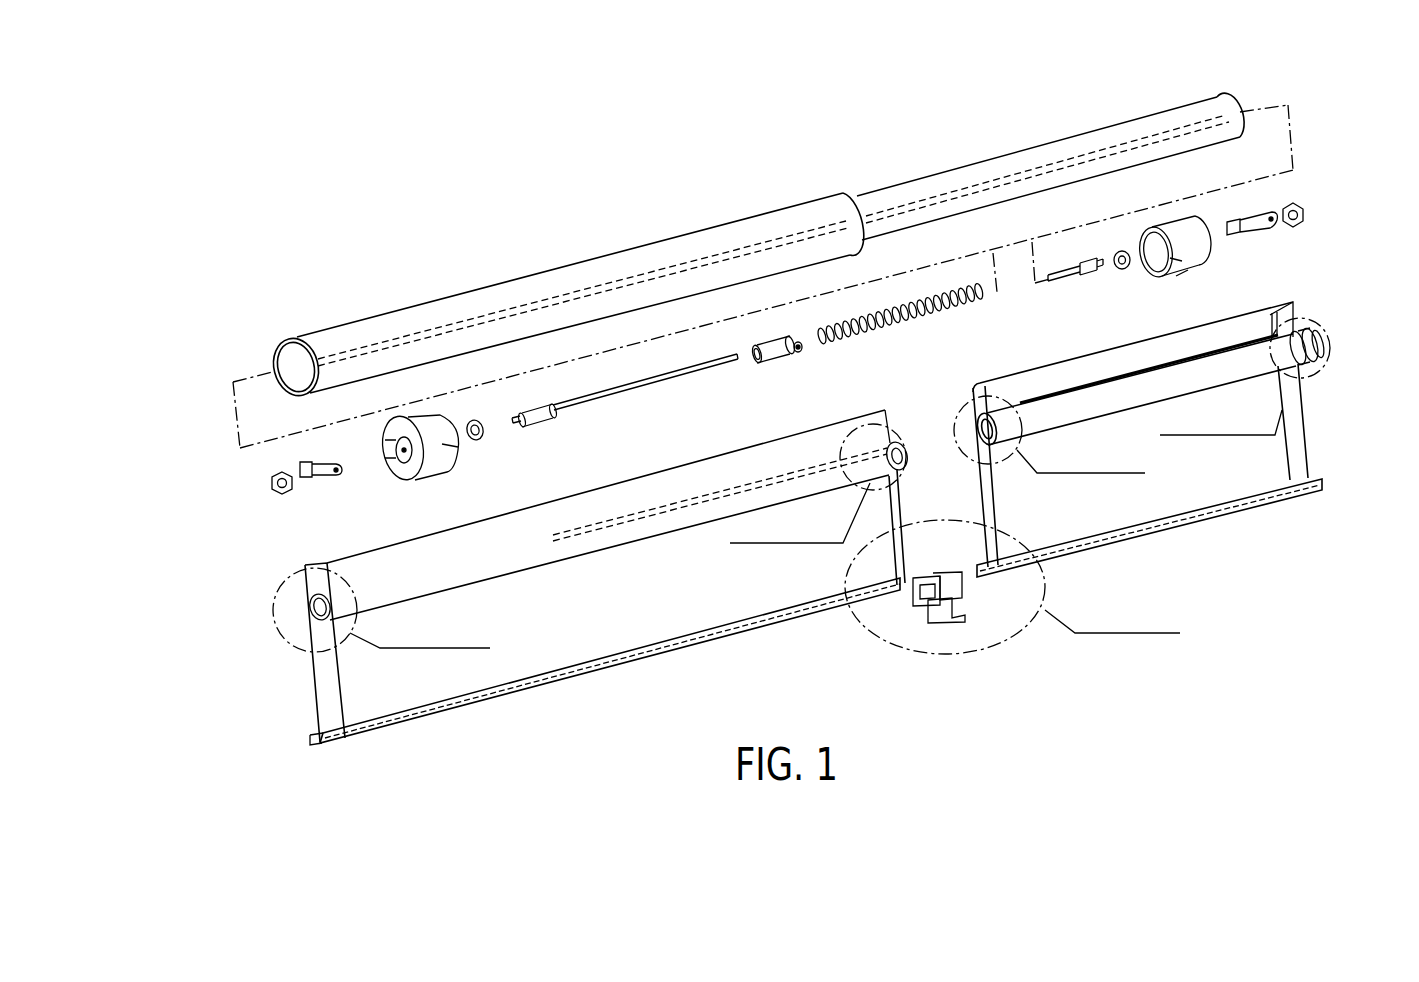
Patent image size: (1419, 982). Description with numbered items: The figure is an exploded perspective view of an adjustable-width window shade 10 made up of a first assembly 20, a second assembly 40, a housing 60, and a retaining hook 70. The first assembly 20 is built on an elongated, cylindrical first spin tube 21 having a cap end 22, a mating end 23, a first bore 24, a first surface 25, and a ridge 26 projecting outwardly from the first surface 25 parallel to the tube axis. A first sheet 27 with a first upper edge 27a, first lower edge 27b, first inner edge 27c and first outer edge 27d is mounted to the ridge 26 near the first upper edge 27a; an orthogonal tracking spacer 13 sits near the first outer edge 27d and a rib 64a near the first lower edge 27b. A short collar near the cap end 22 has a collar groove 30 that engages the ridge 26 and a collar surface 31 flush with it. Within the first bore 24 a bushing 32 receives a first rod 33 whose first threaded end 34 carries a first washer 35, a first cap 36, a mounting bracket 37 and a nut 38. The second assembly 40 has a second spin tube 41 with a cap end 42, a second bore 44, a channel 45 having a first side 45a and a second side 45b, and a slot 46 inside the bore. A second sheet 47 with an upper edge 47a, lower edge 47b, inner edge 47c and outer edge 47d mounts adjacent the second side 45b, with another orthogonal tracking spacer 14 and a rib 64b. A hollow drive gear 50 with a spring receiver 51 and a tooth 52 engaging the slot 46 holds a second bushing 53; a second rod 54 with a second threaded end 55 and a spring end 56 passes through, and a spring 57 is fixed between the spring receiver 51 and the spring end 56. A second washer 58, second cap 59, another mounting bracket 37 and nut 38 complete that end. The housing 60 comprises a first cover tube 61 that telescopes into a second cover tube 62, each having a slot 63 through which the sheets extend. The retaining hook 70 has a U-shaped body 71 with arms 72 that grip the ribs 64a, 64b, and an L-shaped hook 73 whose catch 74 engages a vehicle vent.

The adjustable-width window shade 10 is at (563, 208).
The orthogonal tracking spacer 13 is at (1315, 452).
The orthogonal tracking spacer 14 is at (345, 690).
The first assembly 20 is at (1312, 180).
The first spin tube 21 is at (1114, 390).
The cap end 22 is at (1302, 318).
The mating end 23 is at (957, 462).
The first bore 24 is at (973, 452).
The first surface 25 is at (1114, 390).
The ridge 26 is at (986, 428).
The first sheet 27 is at (1333, 445).
The first upper edge 27a is at (1143, 330).
The first lower edge 27b is at (1168, 528).
The first inner edge 27c is at (983, 510).
The first outer edge 27d is at (1302, 397).
The collar groove 30 is at (1328, 324).
The collar surface 31 is at (1324, 334).
The bushing 32 is at (1088, 273).
The first rod 33 is at (1067, 288).
The first threaded end 34 is at (1100, 262).
The first washer 35 is at (1127, 268).
The first cap 36 is at (1200, 227).
The mounting bracket 37 is at (1253, 230).
The nut 38 is at (1305, 220).
The second assembly 40 is at (253, 423).
The second spin tube 41 is at (634, 499).
The cap end 42 is at (280, 600).
The second bore 44 is at (287, 643).
The channel 45 is at (888, 425).
The first side 45a is at (873, 442).
The second side 45b is at (905, 453).
The slot 46 is at (307, 590).
The second sheet 47 is at (595, 683).
The upper edge 47a is at (468, 520).
The lower edge 47b is at (576, 673).
The inner edge 47c is at (897, 487).
The outer edge 47d is at (312, 650).
The drive gear 50 is at (795, 365).
The spring receiver 51 is at (805, 350).
The tooth 52 is at (757, 345).
The second bushing 53 is at (550, 420).
The second rod 54 is at (653, 405).
The second threaded end 55 is at (520, 422).
The spring end 56 is at (707, 366).
The spring 57 is at (962, 307).
The second washer 58 is at (483, 438).
The second cap 59 is at (420, 480).
The housing 60 is at (820, 153).
The first cover tube 61 is at (1015, 152).
The second cover tube 62 is at (548, 297).
The slot 63 is at (273, 370).
The rib 64a is at (1163, 524).
The rib 64b is at (317, 740).
The retaining hook 70 is at (1012, 614).
The U-shaped body 71 is at (907, 608).
The arms 72 is at (912, 587).
The L-shaped hook 73 is at (970, 601).
The catch 74 is at (957, 623).